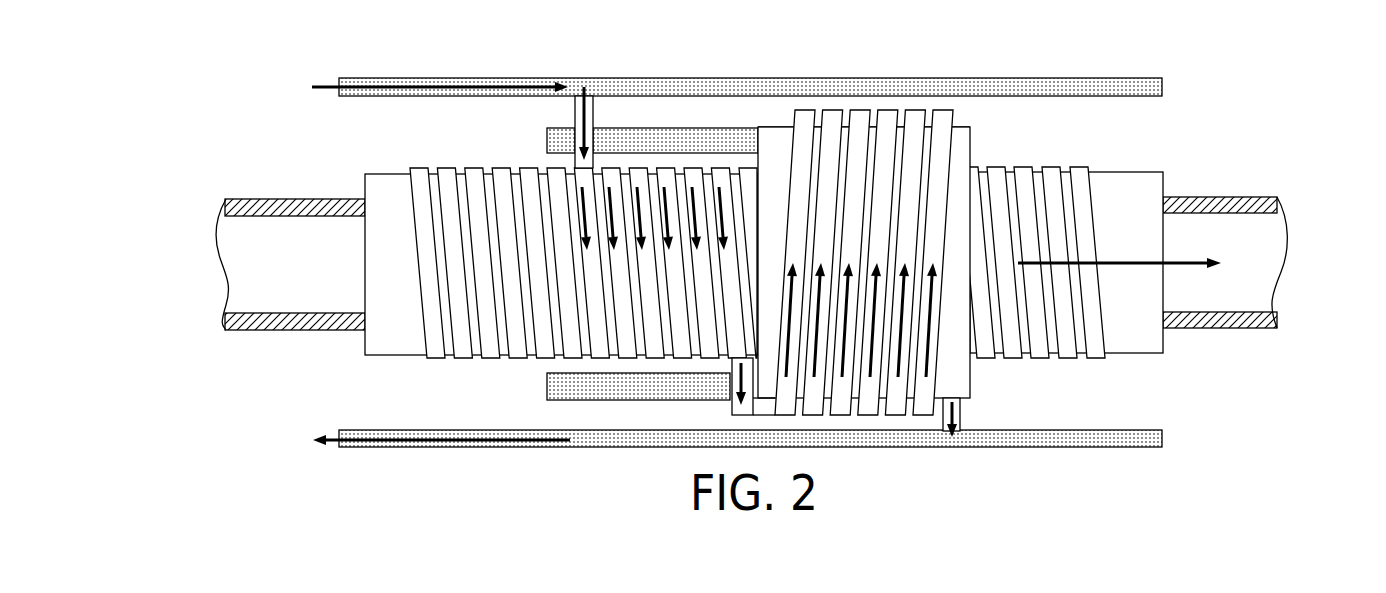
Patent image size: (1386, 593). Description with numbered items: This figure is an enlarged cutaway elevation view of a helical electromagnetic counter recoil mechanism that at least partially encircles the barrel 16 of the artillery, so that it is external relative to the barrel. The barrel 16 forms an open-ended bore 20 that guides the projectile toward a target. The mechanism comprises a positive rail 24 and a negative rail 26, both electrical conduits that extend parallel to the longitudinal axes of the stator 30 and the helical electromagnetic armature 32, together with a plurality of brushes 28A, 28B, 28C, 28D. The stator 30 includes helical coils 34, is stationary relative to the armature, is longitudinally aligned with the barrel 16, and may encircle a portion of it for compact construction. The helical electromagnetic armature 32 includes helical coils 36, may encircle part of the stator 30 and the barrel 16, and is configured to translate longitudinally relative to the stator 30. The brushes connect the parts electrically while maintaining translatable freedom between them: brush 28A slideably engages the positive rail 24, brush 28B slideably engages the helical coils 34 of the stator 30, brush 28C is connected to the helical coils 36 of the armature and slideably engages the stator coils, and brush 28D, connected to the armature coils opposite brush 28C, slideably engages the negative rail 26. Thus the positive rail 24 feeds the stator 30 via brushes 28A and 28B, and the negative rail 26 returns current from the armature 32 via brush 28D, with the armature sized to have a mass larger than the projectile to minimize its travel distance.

The barrel 16 is at (258, 200).
The bore 20 is at (288, 292).
The positive rail 24 is at (818, 78).
The negative rail 26 is at (488, 448).
The brush 28A is at (593, 98).
The brush 28B is at (573, 160).
The brush 28C is at (727, 370).
The brush 28D is at (957, 418).
The stator 30 is at (1130, 186).
The helical electromagnetic armature 32 is at (957, 375).
The helical coils 34 is at (1070, 350).
The helical coils 36 is at (915, 117).